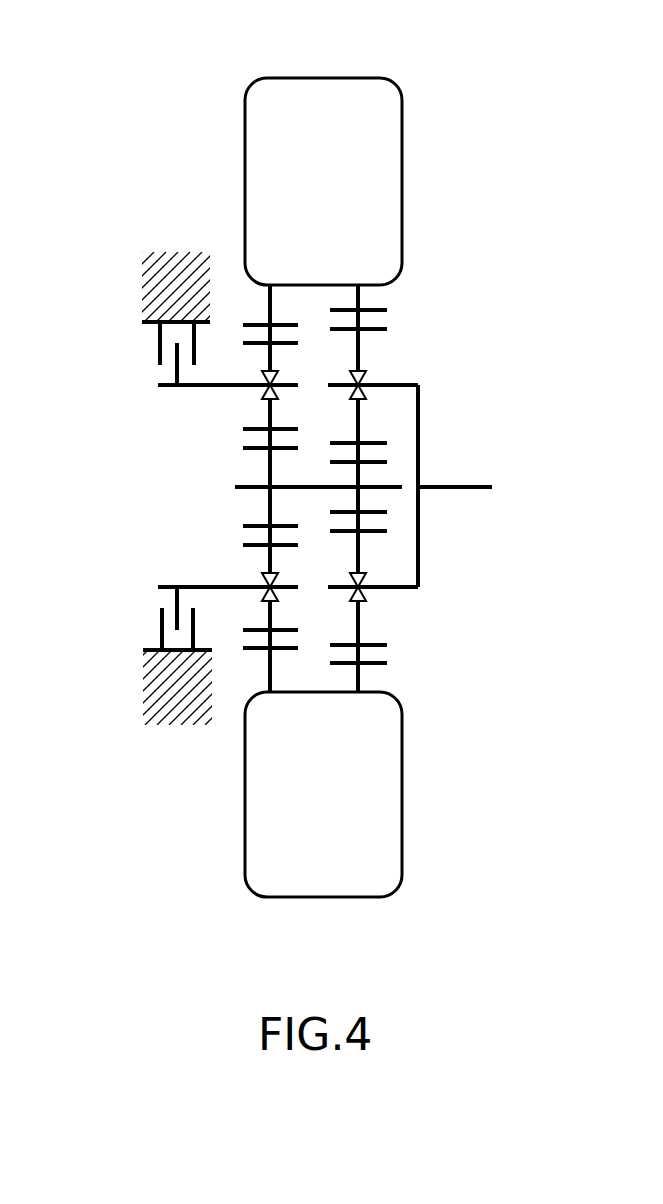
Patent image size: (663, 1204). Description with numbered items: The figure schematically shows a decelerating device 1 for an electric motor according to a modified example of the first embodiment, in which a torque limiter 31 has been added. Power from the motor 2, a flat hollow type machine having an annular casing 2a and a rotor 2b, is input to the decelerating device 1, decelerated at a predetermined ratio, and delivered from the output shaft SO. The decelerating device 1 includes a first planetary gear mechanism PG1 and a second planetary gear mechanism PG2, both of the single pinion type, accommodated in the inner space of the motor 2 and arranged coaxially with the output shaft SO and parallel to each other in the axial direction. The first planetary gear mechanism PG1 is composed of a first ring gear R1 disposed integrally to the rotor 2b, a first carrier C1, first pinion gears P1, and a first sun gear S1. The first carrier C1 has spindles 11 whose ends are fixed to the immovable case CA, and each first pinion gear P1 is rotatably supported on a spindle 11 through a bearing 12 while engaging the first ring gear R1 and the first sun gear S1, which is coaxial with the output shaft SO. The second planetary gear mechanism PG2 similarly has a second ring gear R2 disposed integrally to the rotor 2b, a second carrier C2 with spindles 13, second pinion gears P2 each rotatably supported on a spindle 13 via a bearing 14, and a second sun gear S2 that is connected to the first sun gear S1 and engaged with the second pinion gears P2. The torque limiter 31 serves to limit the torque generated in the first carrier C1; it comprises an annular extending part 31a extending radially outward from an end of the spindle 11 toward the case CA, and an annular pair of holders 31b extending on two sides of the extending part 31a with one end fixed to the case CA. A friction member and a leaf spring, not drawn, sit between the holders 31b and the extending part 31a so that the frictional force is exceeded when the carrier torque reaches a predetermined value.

The decelerating device 1 is at (492, 84).
The electric motor 2 is at (357, 149).
The casing 2a is at (402, 155).
The rotor 2b is at (268, 307).
The first ring gear R1 is at (252, 322).
The first pinion gears P1 is at (245, 342).
The first carrier C1 is at (185, 358).
The spindles 11 is at (250, 387).
The bearing 12 is at (265, 398).
The first sun gear S1 is at (262, 448).
The output shaft SO is at (468, 488).
The first planetary gear mechanism PG1 is at (246, 666).
The second ring gear R2 is at (384, 310).
The second pinion gears P2 is at (386, 329).
The second carrier C2 is at (414, 464).
The spindles 13 is at (375, 384).
The bearing 14 is at (366, 394).
The second sun gear S2 is at (388, 462).
The second planetary gear mechanism PG2 is at (398, 677).
The torque limiter 31 is at (170, 601).
The extending part 31a is at (175, 603).
The holders 31b is at (158, 610).
The case CA is at (153, 682).